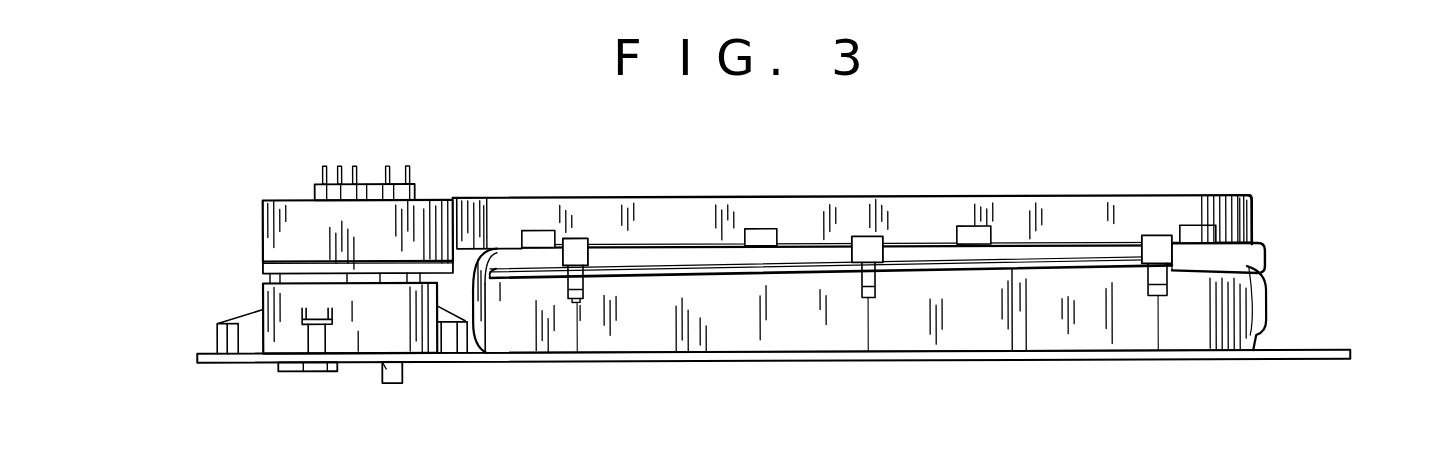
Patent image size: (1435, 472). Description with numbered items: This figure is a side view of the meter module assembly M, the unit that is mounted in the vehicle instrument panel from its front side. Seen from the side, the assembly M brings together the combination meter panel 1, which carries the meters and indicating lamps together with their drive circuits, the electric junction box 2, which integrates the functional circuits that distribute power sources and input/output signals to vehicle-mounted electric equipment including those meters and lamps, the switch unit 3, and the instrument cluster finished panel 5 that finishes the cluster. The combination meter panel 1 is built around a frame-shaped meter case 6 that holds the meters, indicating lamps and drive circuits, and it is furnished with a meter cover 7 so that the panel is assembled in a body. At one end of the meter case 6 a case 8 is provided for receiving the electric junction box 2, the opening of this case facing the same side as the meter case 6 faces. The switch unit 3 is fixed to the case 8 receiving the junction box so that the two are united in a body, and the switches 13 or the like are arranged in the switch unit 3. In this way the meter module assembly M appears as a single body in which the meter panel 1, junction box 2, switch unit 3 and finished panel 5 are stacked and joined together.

The meter module assembly M is at (909, 224).
The combination meter panel 1 is at (1268, 245).
The electric junction box 2 is at (1172, 195).
The switch unit 3 is at (263, 291).
The instrument cluster finished panel 5 is at (1226, 361).
The meter case 6 is at (1255, 209).
The meter cover 7 is at (1267, 302).
The case receiving the electric junction box 8 is at (263, 233).
The switches 13 is at (320, 370).